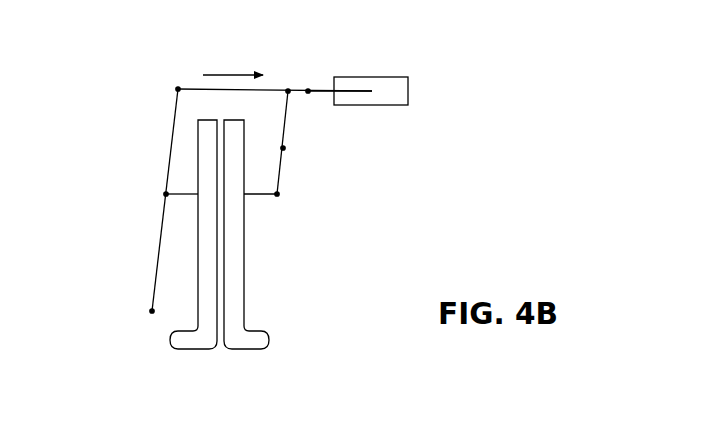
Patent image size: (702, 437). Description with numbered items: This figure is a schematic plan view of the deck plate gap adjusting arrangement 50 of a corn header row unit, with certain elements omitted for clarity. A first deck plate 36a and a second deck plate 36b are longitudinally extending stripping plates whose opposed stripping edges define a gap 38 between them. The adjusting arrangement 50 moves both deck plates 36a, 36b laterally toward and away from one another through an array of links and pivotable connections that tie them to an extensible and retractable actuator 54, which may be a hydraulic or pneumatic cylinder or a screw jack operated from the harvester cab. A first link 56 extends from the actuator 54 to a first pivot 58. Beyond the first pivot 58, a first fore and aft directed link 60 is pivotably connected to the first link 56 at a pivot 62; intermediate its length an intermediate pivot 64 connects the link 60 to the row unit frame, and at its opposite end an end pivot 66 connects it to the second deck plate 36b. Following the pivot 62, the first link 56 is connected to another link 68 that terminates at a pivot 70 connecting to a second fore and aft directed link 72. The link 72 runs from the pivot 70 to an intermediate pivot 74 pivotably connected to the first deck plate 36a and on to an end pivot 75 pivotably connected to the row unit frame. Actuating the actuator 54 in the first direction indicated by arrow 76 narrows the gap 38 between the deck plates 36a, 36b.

The adjusting arrangement 50 is at (158, 51).
The extensible and retractable actuator 54 is at (387, 77).
The first link 56 is at (323, 91).
The first pivot 58 is at (308, 91).
The first fore and aft directed link 60 is at (287, 119).
The pivot 62 is at (288, 91).
The intermediate pivot 64 is at (283, 148).
The end pivot 66 is at (277, 194).
The link 68 is at (196, 89).
The pivot 70 is at (178, 89).
The second fore and aft directed link 72 is at (172, 145).
The intermediate pivot 74 is at (166, 194).
The end pivot 75 is at (152, 311).
The arrow 76 is at (230, 75).
The gap 38 is at (226, 308).
The first deck plate 36a is at (188, 350).
The second deck plate 36b is at (252, 350).